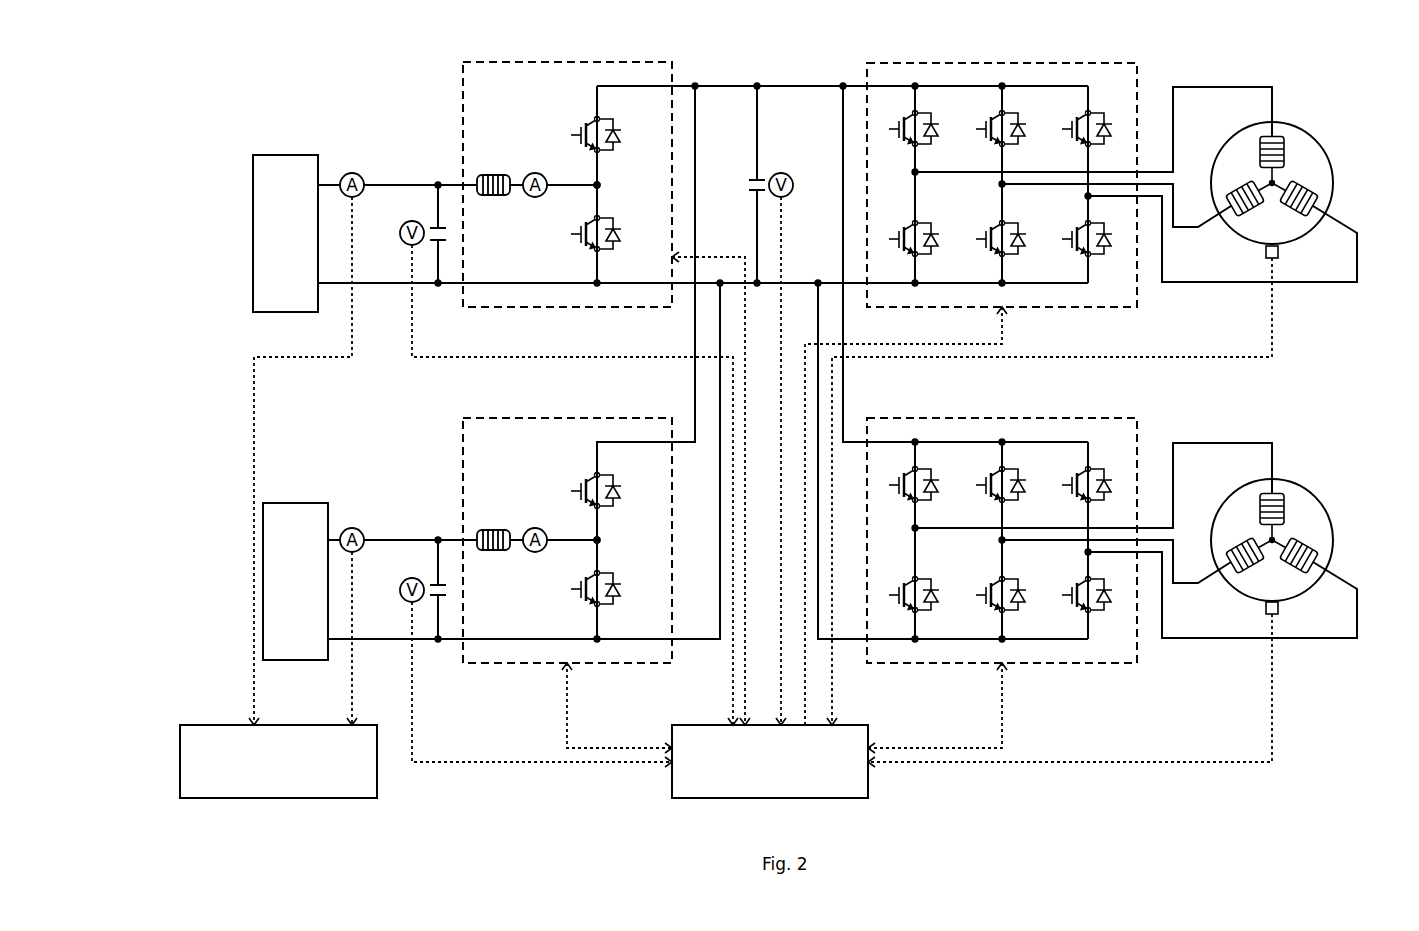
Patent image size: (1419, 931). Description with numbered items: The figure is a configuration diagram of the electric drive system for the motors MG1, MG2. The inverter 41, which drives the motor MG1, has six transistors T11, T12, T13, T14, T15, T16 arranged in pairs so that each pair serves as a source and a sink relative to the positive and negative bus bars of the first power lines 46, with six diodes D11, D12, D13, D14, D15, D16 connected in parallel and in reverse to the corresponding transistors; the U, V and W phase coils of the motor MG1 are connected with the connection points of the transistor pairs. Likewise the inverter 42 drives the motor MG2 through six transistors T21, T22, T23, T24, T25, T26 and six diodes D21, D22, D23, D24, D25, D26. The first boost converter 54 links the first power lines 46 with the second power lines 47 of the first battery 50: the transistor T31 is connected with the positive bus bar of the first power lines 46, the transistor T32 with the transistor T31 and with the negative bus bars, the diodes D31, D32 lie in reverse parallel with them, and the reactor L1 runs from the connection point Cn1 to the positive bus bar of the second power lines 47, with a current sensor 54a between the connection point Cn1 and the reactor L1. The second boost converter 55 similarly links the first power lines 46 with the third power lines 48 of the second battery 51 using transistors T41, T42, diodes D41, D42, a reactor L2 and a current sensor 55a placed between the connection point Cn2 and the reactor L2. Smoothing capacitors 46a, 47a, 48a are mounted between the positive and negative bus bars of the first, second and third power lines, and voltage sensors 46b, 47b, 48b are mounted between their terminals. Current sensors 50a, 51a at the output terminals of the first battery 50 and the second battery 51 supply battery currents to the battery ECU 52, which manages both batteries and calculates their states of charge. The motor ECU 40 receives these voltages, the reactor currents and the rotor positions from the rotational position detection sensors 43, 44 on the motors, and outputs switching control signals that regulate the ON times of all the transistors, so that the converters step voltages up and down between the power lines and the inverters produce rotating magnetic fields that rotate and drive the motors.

The motor electronic control unit 40 is at (855, 724).
The inverter 41 is at (1002, 160).
The inverter 42 is at (1002, 517).
The rotational position sensor of MG1 43 is at (1280, 252).
The rotational position sensor of MG2 44 is at (1280, 608).
The first power lines 46 is at (780, 148).
The capacitor 46a is at (752, 178).
The voltage sensor 46b is at (779, 172).
The second power lines 47 is at (405, 220).
The capacitor 47a is at (435, 227).
The voltage sensor 47b is at (411, 220).
The third power lines 48 is at (405, 576).
The capacitor 48a is at (435, 584).
The voltage sensor 48b is at (411, 577).
The first battery 50 is at (302, 154).
The current sensor 50a is at (352, 172).
The second battery 51 is at (303, 502).
The current sensor 51a is at (352, 527).
The battery electronic control unit 52 is at (289, 724).
The first boost converter 54 is at (567, 160).
The current sensor 54a is at (534, 172).
The second boost converter 55 is at (567, 516).
The current sensor 55a is at (534, 527).
The reactor L1 is at (491, 174).
The reactor L2 is at (491, 529).
The connection point Cn1 is at (603, 185).
The connection point Cn2 is at (603, 540).
The motor MG1 is at (1299, 128).
The motor MG2 is at (1299, 485).
The transistor T11 is at (898, 128).
The transistor T12 is at (985, 128).
The transistor T13 is at (1071, 128).
The transistor T14 is at (898, 238).
The transistor T15 is at (985, 238).
The transistor T16 is at (1071, 238).
The transistor T21 is at (898, 484).
The transistor T22 is at (985, 484).
The transistor T23 is at (1071, 484).
The transistor T24 is at (898, 594).
The transistor T25 is at (985, 594).
The transistor T26 is at (1071, 594).
The transistor T31 is at (580, 134).
The transistor T32 is at (580, 233).
The transistor T41 is at (580, 490).
The transistor T42 is at (580, 588).
The diode D11 is at (934, 136).
The diode D12 is at (1021, 136).
The diode D13 is at (1107, 136).
The diode D14 is at (934, 246).
The diode D15 is at (1021, 246).
The diode D16 is at (1107, 246).
The diode D21 is at (934, 492).
The diode D22 is at (1021, 492).
The diode D23 is at (1107, 492).
The diode D24 is at (934, 602).
The diode D25 is at (1021, 602).
The diode D26 is at (1107, 602).
The diode D31 is at (616, 142).
The diode D32 is at (616, 241).
The diode D41 is at (616, 498).
The diode D42 is at (616, 596).